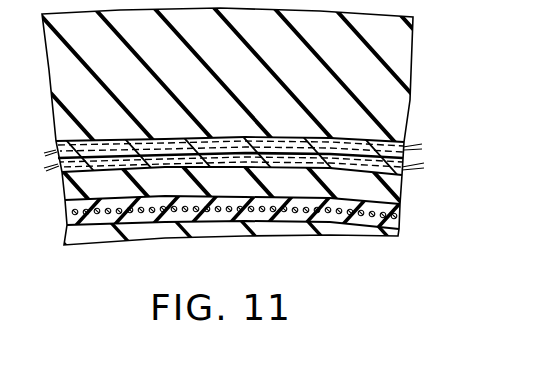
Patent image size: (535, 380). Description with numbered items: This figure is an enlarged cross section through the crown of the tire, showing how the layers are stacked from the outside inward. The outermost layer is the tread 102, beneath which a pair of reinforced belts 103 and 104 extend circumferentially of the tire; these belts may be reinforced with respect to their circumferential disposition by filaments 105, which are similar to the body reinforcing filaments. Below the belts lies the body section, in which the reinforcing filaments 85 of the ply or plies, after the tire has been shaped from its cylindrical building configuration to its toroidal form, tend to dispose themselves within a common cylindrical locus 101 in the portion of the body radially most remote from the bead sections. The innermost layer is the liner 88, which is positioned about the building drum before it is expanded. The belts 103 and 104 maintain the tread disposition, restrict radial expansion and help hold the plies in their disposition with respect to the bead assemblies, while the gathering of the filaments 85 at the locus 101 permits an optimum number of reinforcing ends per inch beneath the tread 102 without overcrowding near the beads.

The tread 102 is at (403, 58).
The belt 103 is at (405, 143).
The filaments 105 is at (405, 167).
The belt 104 is at (403, 176).
The reinforcing filaments 85 is at (400, 213).
The common cylindrical locus 101 is at (322, 217).
The liner 88 is at (170, 236).